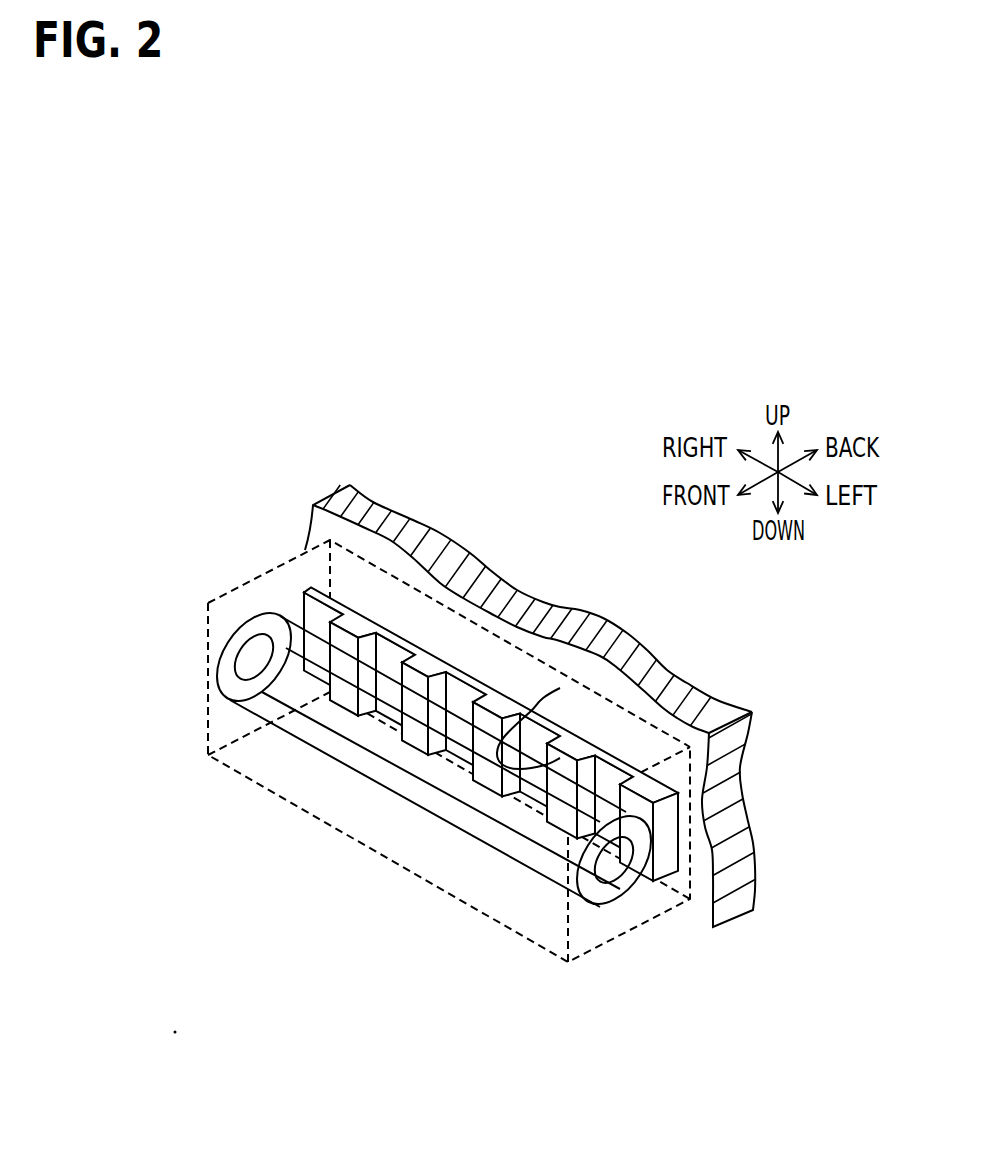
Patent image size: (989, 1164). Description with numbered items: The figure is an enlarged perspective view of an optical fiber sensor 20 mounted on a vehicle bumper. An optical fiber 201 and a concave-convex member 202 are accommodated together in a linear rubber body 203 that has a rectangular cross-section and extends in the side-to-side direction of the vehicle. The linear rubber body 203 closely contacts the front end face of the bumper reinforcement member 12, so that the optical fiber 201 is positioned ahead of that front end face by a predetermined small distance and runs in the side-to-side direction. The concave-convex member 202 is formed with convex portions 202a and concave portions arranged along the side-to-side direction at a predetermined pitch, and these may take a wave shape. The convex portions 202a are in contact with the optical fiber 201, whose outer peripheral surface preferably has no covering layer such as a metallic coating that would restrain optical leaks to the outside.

The optical fiber sensor 20 is at (253, 522).
The bumper reinforcement member 12 is at (580, 631).
The optical fiber 201 is at (607, 875).
The concave-convex member 202 is at (672, 847).
The convex portions 202a is at (560, 688).
The linear rubber body 203 is at (355, 812).